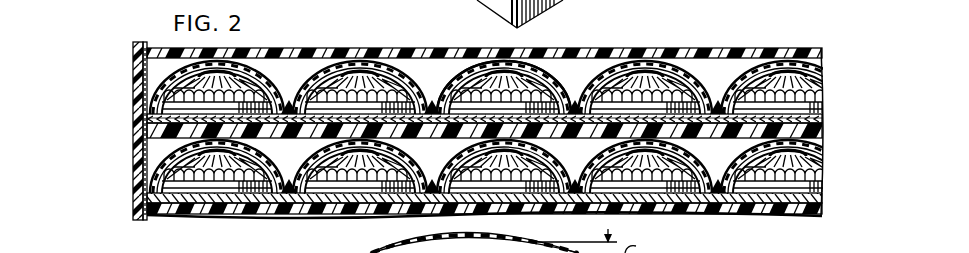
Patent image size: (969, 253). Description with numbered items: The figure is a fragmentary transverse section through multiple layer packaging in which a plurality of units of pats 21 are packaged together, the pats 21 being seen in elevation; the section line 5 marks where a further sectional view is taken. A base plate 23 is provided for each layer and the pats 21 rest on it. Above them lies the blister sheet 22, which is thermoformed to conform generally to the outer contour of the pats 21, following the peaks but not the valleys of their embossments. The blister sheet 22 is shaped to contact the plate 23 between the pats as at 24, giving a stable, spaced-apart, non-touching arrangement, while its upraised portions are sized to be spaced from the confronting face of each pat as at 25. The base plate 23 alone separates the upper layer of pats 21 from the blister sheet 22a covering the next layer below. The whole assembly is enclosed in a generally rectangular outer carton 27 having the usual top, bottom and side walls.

The section line 5- 5 is at (118, 72).
The pats 21 is at (660, 62).
The blister sheet 22 is at (545, 57).
The blister sheet covering the next layer of pats below 22a is at (282, 197).
The base plate 23 is at (703, 108).
The contact between blister sheet and plate 24 is at (431, 110).
The spacing between blister sheet and pat face 25 is at (483, 70).
The outer carton 27 is at (132, 162).